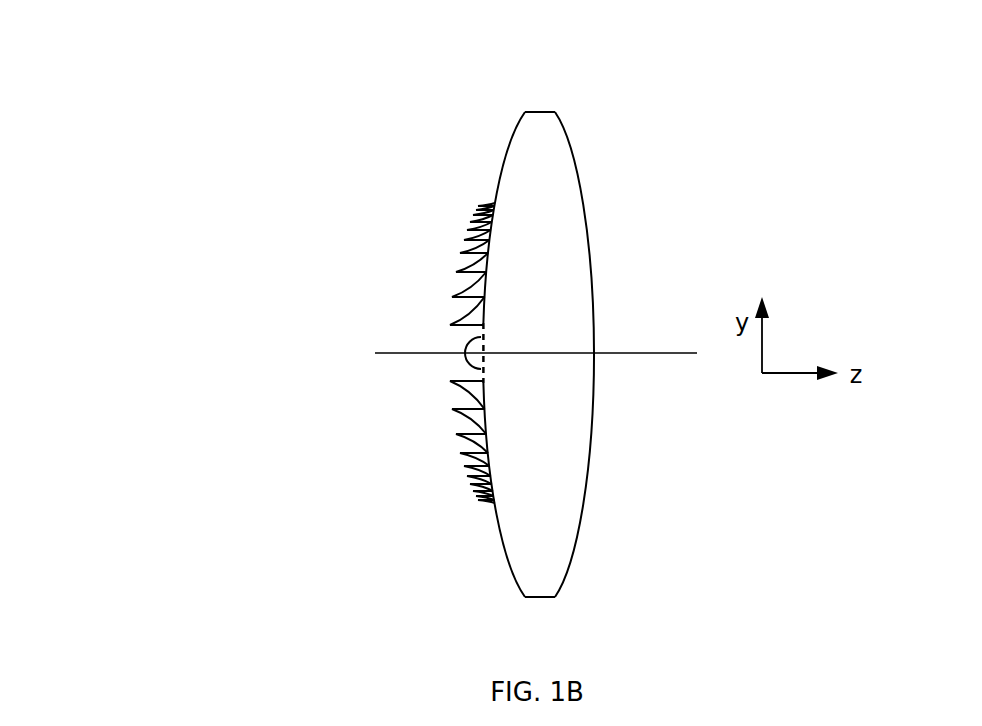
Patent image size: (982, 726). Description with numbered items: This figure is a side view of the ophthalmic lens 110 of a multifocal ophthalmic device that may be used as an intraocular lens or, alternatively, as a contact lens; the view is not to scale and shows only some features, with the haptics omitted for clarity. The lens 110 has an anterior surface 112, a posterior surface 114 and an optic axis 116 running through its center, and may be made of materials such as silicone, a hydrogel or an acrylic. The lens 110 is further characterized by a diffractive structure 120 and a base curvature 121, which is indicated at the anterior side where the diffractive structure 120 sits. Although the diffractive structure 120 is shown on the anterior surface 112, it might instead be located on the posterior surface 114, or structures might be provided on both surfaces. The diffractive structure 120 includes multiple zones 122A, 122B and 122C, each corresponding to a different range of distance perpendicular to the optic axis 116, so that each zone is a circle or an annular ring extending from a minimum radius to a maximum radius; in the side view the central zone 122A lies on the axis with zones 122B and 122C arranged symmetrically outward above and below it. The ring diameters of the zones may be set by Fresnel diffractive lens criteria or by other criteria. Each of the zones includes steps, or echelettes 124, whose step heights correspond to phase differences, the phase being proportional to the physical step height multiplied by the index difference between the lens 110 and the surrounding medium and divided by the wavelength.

The ophthalmic lens 110 is at (512, 66).
The anterior surface 112 is at (480, 562).
The posterior surface 114 is at (601, 562).
The optic axis 116 is at (420, 354).
The diffractive structure 120 is at (439, 337).
The base curvature 121 is at (506, 330).
The zone 122A is at (330, 400).
The zone 122B is at (310, 308).
The zone 122C is at (330, 248).
The echelettes 124 is at (483, 296).